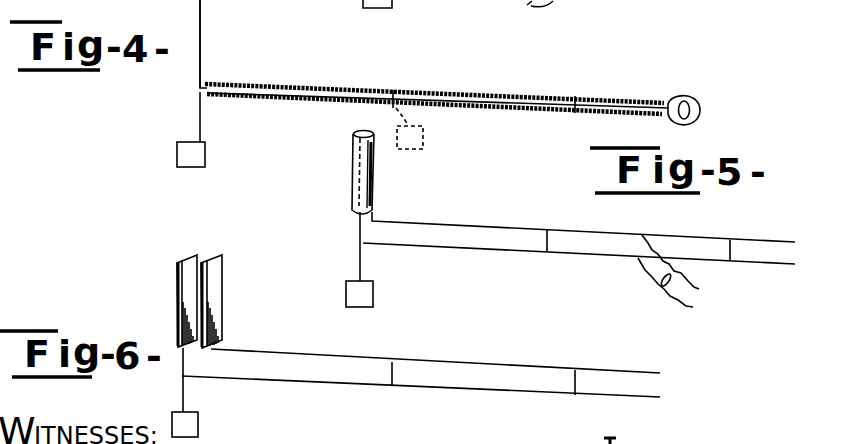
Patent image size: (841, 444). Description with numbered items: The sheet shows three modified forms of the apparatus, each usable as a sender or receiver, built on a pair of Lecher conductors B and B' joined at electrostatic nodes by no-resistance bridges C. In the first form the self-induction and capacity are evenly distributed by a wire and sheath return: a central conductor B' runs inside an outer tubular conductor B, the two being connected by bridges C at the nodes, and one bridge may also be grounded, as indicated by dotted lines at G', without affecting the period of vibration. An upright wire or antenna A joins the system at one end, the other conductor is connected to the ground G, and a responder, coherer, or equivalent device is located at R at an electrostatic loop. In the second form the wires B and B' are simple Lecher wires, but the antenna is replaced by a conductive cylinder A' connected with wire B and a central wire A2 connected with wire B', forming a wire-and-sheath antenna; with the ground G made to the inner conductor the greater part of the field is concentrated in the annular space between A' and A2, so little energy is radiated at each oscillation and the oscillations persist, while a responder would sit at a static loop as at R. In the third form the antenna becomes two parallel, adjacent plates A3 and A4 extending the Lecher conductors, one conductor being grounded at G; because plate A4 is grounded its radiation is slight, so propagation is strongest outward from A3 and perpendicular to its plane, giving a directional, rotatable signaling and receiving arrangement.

In FIG. 4, the upright wire or antenna A is at (215, 44).
In FIG. 5, the conductive cylinder A' is at (384, 173).
In FIG. 5, the central wire A2 is at (354, 186).
In FIG. 6, the plate A3 is at (221, 302).
In FIG. 6, the plate A4 is at (182, 299).
In FIG. 4, the Lecher wire (outer tubular conductor) B is at (436, 82).
In FIG. 5, the Lecher wire (outer tubular conductor) B is at (583, 220).
In FIG. 6, the Lecher wire (outer tubular conductor) B is at (435, 350).
In FIG. 4, the Lecher wire (central conductor) B' is at (434, 119).
In FIG. 5, the Lecher wire (central conductor) B' is at (579, 264).
In FIG. 6, the Lecher wire (central conductor) B' is at (421, 400).
In FIG. 4, the no-resistance bridge C is at (575, 92).
In FIG. 5, the no-resistance bridge C is at (736, 250).
In FIG. 6, the no-resistance bridge C is at (581, 382).
In FIG. 4, the ground G is at (191, 154).
In FIG. 5, the ground G is at (359, 259).
In FIG. 6, the ground G is at (185, 393).
In FIG. 4, the grounded bridge connection G' is at (409, 129).
In FIG. 4, the responder R is at (691, 112).
In FIG. 5, the responder R is at (666, 280).